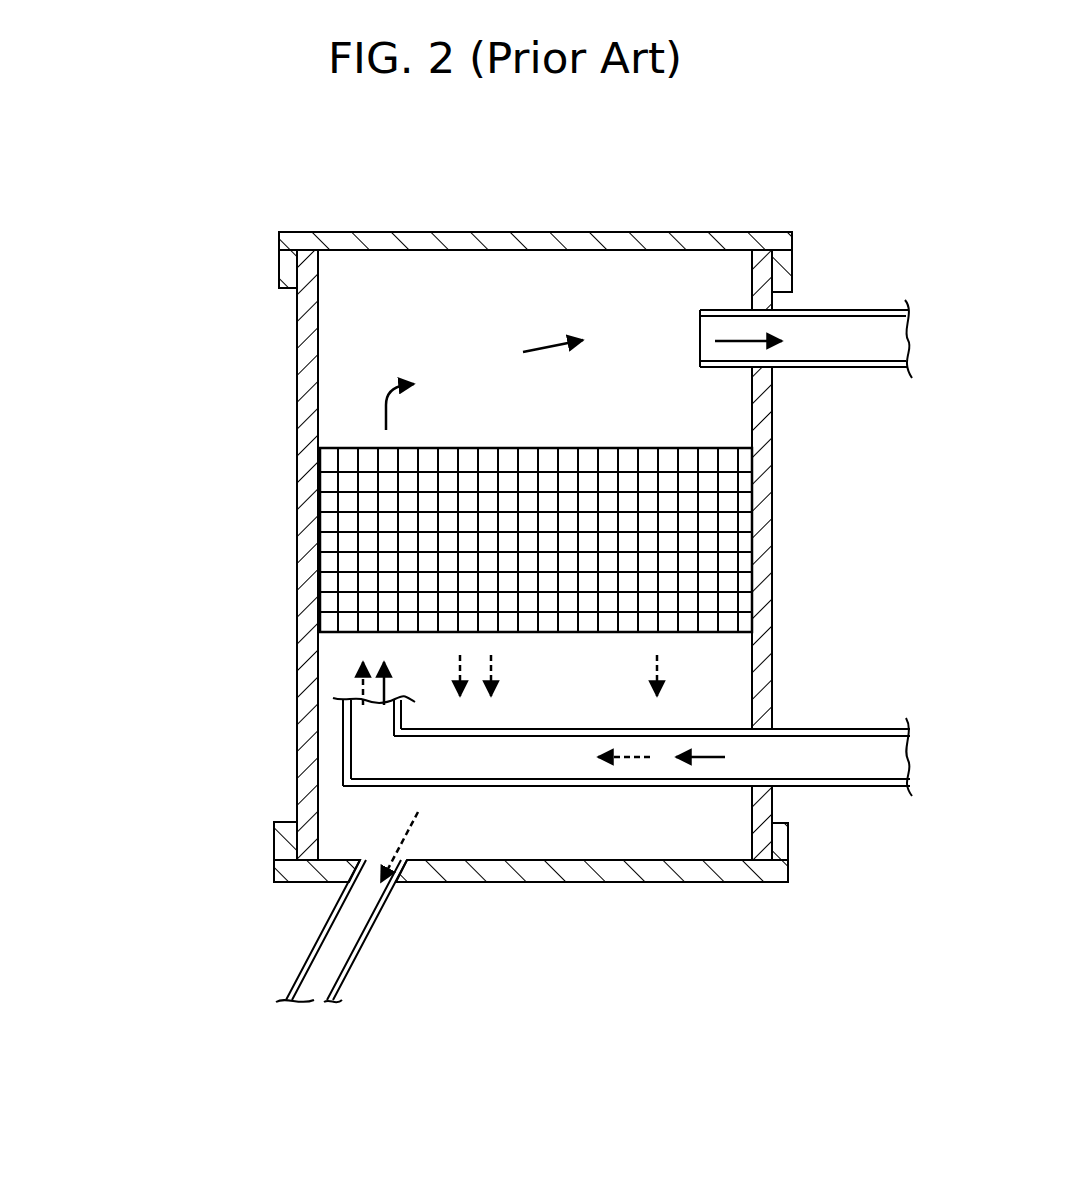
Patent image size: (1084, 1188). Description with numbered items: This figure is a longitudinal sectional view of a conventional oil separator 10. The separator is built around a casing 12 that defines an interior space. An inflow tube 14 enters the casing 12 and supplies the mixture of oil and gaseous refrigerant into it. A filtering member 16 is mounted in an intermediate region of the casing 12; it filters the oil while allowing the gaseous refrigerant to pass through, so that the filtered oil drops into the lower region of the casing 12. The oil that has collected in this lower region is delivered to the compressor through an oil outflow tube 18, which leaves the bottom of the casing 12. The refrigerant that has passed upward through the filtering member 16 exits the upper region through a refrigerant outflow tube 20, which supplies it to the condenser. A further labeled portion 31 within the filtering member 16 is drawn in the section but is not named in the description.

The oil separator 10 is at (196, 350).
The casing 12 is at (297, 347).
The inflow tube 14 is at (862, 786).
The filtering member 16 is at (352, 543).
The oil outflow tube 18 is at (375, 912).
The refrigerant outflow tube 20 is at (842, 310).
The catalyst layer 31 is at (720, 546).